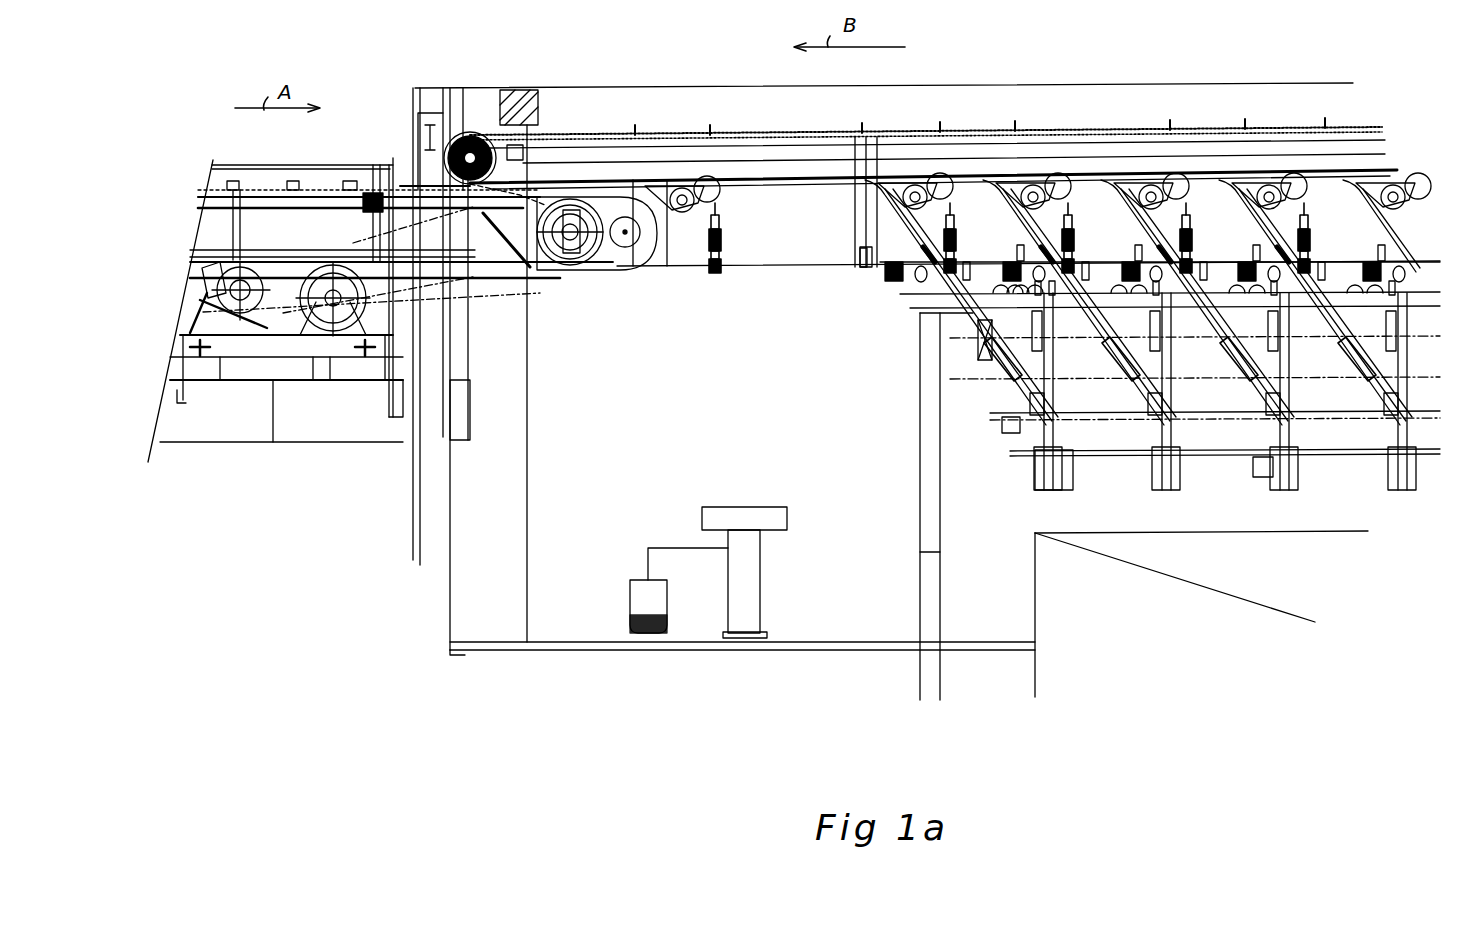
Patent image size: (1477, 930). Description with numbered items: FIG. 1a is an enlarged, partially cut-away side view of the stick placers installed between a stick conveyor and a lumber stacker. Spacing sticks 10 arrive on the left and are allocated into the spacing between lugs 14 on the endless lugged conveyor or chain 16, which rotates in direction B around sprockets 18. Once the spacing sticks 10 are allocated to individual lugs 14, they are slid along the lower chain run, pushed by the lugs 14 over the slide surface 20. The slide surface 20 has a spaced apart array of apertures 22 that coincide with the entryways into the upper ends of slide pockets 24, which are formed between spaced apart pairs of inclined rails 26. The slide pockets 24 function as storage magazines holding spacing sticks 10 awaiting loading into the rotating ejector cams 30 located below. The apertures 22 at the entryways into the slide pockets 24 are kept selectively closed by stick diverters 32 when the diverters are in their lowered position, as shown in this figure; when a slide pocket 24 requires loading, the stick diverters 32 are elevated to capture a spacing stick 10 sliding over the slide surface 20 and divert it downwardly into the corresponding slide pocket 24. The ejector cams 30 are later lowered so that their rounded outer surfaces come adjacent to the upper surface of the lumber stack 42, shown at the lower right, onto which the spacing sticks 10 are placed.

The spacing sticks 10 is at (293, 180).
The lugs 14 is at (640, 125).
The endless lugged conveyor 16 is at (728, 125).
The sprockets 18 is at (466, 133).
The slide surface 20 is at (778, 194).
The apertures 22 is at (1118, 178).
The slide pockets 24 is at (930, 281).
The inclined rails 26 is at (968, 325).
The ejector cams 30 is at (1040, 422).
The stick diverters 32 is at (1025, 185).
The lumber stack 42 is at (1255, 550).